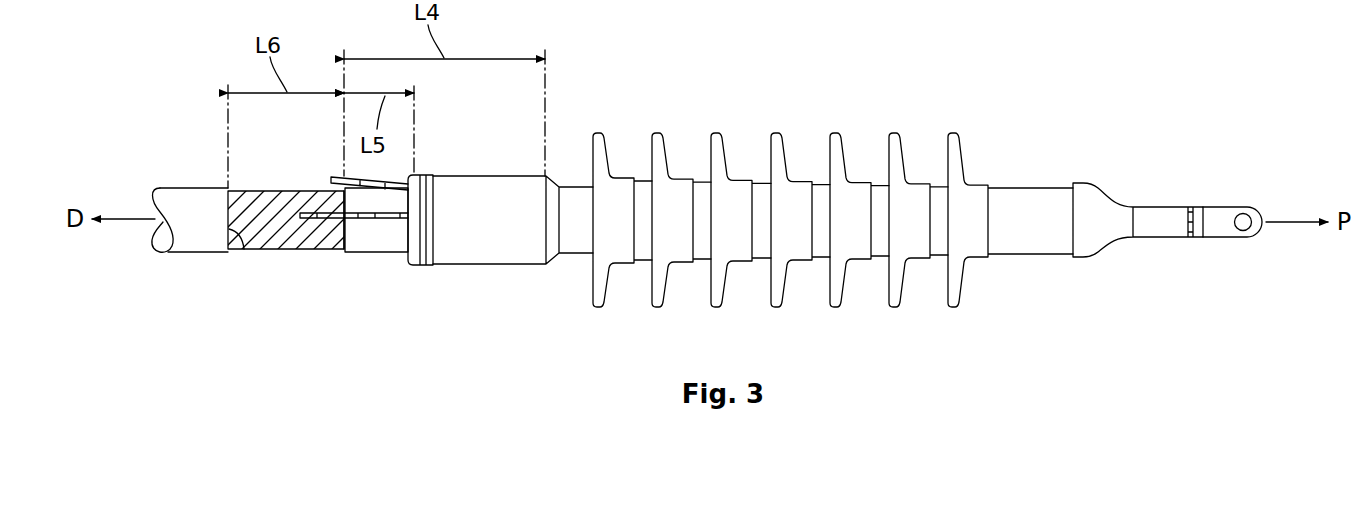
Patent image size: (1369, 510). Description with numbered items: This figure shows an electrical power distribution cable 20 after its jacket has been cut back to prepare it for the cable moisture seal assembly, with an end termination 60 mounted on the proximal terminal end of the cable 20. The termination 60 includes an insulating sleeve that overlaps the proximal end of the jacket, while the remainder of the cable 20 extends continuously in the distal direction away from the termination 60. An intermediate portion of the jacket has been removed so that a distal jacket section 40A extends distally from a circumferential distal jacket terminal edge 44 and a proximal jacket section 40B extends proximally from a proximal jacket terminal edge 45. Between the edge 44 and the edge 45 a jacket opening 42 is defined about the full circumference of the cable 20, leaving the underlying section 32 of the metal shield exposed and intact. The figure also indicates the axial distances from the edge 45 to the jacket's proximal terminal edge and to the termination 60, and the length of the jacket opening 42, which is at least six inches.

The electrical power distribution cable 20 is at (181, 176).
The exposed shield section 32 is at (282, 196).
The distal jacket section 40A is at (203, 244).
The proximal jacket section 40B is at (378, 240).
The jacket opening 42 is at (292, 296).
The distal jacket terminal edge 44 is at (244, 249).
The proximal jacket terminal edge 45 is at (347, 233).
The end termination 60 is at (904, 124).